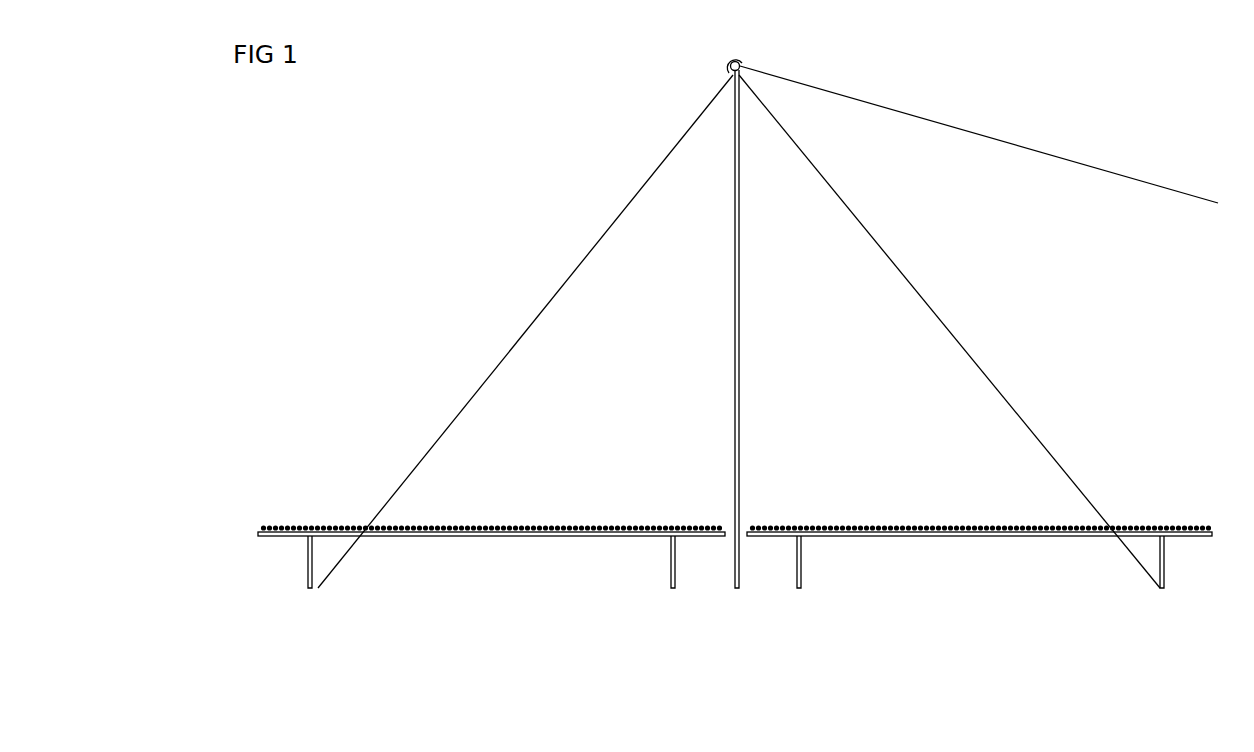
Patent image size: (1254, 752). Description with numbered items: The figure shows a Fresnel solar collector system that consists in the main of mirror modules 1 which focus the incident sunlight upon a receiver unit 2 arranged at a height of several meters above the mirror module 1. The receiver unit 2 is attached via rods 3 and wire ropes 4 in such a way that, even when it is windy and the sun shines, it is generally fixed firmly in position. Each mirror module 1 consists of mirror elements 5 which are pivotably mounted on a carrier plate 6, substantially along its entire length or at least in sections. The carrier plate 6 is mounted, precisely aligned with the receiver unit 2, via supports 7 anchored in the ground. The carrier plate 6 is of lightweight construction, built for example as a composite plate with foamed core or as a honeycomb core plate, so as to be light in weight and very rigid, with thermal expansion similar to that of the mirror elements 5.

The mirror module 1 is at (754, 373).
The receiver unit 2 is at (994, 142).
The rod 3 is at (735, 588).
The wire rope 4 is at (1002, 394).
The mirror element 5 is at (425, 529).
The carrier plate 6 is at (545, 535).
The support 7 is at (671, 560).